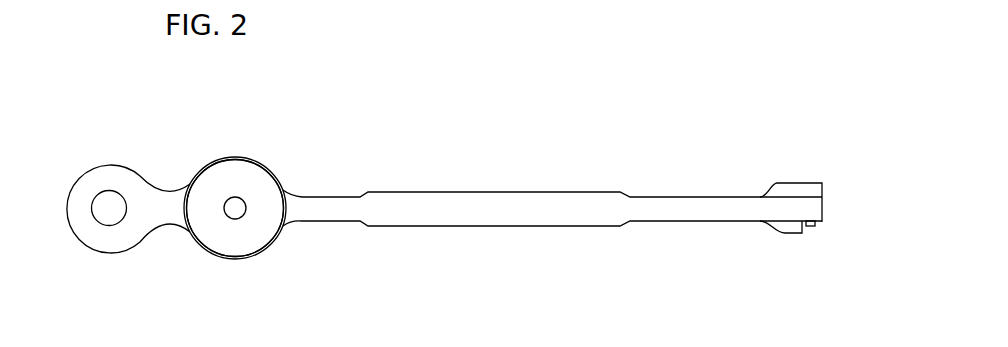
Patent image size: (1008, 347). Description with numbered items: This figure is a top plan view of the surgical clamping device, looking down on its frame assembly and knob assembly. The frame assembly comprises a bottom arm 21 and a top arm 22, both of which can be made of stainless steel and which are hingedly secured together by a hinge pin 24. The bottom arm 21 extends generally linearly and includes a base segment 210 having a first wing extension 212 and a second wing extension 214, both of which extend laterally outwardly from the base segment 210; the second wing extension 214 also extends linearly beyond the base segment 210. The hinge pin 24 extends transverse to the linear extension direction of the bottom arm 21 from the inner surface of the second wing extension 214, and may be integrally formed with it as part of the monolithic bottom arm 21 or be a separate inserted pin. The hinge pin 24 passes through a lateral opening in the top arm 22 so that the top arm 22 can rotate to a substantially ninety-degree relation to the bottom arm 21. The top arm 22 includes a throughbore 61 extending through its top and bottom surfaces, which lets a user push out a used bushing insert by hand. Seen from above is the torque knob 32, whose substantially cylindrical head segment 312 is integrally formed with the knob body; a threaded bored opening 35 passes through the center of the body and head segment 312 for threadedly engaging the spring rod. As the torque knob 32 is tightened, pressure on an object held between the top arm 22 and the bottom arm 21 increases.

The bottom arm 21 is at (473, 204).
The top arm 22 is at (507, 198).
The hinge pin 24 is at (815, 225).
The torque knob 32 is at (243, 162).
The bored opening 35 is at (230, 204).
The throughbore 61 is at (105, 203).
The base segment 210 is at (809, 214).
The first wing extension 212 is at (787, 227).
The second wing extension 214 is at (805, 188).
The head segment 312 is at (270, 200).